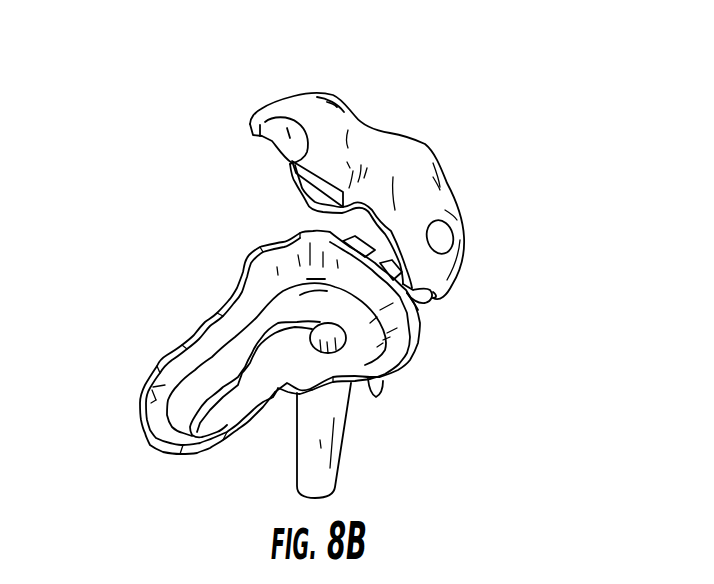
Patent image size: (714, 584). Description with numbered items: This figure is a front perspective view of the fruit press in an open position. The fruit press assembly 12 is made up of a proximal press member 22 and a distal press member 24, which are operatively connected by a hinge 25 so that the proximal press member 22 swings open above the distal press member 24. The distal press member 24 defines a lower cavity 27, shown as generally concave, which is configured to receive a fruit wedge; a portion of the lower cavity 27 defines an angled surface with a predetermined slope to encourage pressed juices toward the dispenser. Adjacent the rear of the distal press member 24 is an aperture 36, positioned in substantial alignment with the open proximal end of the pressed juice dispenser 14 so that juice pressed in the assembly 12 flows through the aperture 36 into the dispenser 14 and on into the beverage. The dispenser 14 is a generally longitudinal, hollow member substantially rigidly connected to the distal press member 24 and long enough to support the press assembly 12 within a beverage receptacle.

The fruit press assembly 12 is at (222, 125).
The proximal press member 22 is at (393, 147).
The distal press member 24 is at (400, 333).
The hinge 25 is at (413, 307).
The lower cavity 27 is at (250, 364).
The aperture 36 is at (333, 348).
The pressed juice dispenser 14 is at (307, 453).